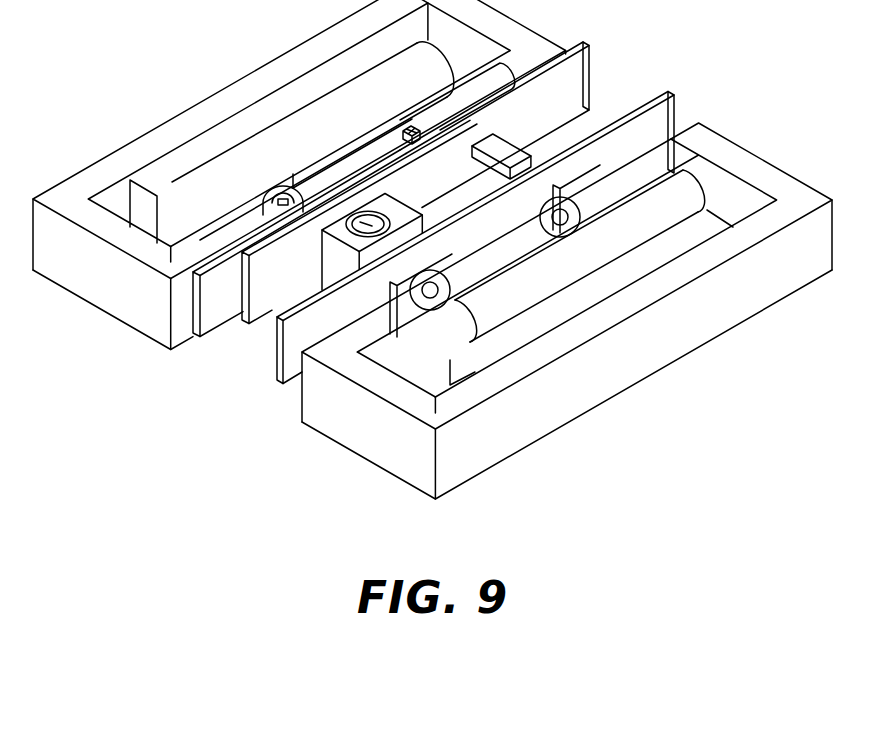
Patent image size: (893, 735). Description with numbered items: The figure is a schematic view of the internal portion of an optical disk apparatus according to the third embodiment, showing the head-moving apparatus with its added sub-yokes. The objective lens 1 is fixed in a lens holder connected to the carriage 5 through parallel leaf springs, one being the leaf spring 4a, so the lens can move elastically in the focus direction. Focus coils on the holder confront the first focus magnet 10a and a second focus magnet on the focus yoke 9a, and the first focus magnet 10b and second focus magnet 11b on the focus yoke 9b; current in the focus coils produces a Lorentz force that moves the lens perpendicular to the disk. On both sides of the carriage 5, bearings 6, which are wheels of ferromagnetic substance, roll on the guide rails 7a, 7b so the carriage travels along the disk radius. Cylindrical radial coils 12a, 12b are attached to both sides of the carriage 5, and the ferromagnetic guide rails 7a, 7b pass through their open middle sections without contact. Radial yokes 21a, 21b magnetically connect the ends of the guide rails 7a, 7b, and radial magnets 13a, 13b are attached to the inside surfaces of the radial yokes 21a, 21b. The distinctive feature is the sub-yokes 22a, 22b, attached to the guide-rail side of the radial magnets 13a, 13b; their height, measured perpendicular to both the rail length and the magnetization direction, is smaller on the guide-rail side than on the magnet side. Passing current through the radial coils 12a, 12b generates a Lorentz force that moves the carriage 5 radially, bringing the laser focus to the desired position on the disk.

The objective lens 1 is at (395, 213).
The leaf spring 4a is at (475, 163).
The carriage 5 is at (517, 147).
The bearing 6 is at (410, 130).
The guide rail 7a is at (390, 360).
The guide rail 7b is at (200, 250).
The focus yoke 9a is at (667, 115).
The focus yoke 9b is at (578, 67).
The first focus magnet 10a is at (315, 285).
The first focus magnet 10b is at (240, 280).
The second focus magnet 11b is at (247, 303).
The radial coil 12a is at (507, 308).
The radial coil 12b is at (297, 178).
The radial magnet 13a is at (557, 313).
The radial magnet 13b is at (220, 135).
The radial yoke 21a is at (733, 318).
The radial yoke 21b is at (297, 72).
The sub-yoke 22a is at (460, 388).
The sub-yoke 22b is at (182, 215).